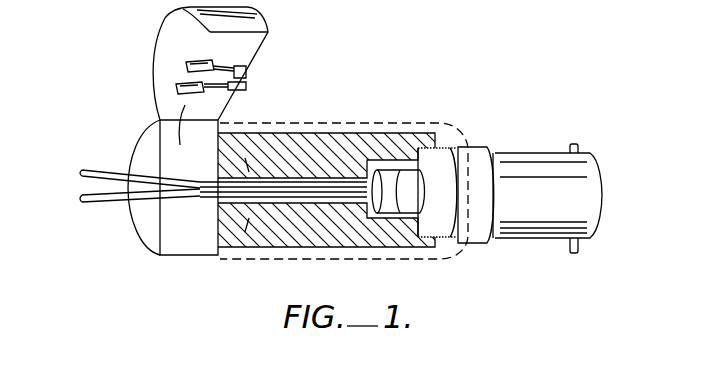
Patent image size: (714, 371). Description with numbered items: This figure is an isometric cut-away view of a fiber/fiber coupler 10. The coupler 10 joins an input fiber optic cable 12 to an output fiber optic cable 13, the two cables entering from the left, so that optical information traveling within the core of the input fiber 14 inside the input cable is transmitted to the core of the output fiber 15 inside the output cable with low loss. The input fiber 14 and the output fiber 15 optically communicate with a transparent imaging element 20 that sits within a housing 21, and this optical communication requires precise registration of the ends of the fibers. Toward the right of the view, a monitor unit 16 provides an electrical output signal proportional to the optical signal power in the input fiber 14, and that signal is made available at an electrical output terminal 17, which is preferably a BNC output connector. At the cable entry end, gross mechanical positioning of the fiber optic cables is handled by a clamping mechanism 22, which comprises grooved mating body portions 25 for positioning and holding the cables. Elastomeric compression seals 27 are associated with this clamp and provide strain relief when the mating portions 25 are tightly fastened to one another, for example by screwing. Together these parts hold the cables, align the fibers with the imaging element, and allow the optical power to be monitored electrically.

The fiber/fiber coupler 10 is at (401, 37).
The input fiber optic cable 12 is at (90, 172).
The output fiber optic cable 13 is at (97, 207).
The input fiber 14 is at (362, 190).
The output fiber 15 is at (362, 190).
The monitor unit 16 is at (450, 147).
The electrical output terminal 17 is at (510, 165).
The transparent imaging element 20 is at (395, 183).
The housing 21 is at (373, 122).
The clamping mechanism 22 is at (171, 267).
The grooved mating body portions 25 is at (177, 143).
The elastomeric compression seals 27 is at (182, 85).